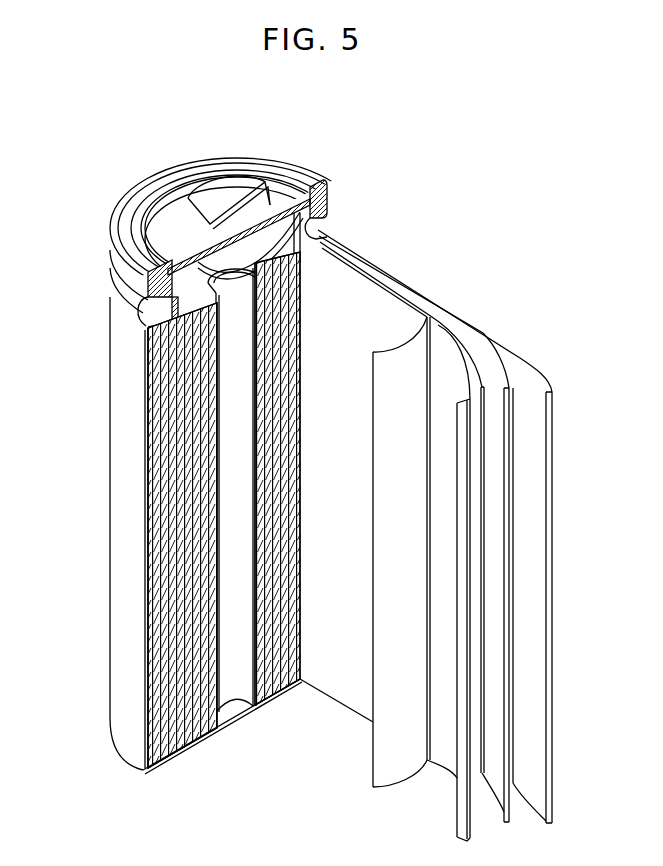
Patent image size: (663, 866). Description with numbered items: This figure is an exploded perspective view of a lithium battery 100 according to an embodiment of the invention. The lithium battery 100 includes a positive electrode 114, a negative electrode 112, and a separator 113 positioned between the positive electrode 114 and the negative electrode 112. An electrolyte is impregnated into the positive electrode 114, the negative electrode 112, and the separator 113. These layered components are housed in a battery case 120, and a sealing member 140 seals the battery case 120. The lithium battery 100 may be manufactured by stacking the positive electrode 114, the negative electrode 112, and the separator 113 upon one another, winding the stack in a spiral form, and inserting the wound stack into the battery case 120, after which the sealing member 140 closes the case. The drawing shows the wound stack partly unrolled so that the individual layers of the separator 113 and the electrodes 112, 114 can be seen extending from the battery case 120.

The lithium battery 100 is at (452, 158).
The negative electrode 112 is at (535, 358).
The separator 113 is at (380, 288).
The positive electrode 114 is at (442, 328).
The battery case 120 is at (113, 483).
The sealing member 140 is at (223, 190).